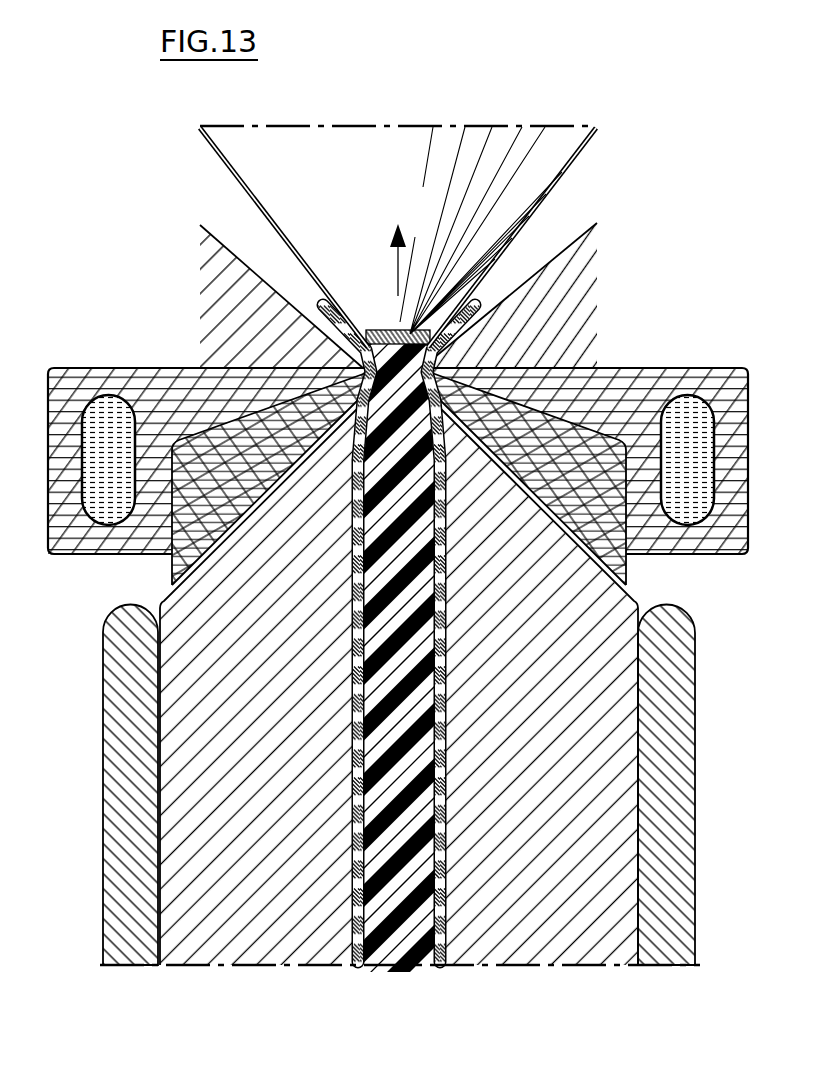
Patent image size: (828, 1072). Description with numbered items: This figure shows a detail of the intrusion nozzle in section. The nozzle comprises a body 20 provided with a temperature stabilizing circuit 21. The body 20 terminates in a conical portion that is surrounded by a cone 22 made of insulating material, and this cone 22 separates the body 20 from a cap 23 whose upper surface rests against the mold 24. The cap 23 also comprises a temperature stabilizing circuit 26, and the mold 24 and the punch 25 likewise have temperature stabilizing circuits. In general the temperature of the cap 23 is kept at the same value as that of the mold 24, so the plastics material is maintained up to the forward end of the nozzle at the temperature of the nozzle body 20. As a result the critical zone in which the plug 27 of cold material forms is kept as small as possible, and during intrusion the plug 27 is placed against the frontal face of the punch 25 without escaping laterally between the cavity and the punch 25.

The body 20 is at (578, 638).
The temperature stabilizing circuit 21 is at (678, 704).
The cone 22 is at (628, 572).
The cap 23 is at (624, 365).
The mold 24 is at (578, 310).
The punch 25 is at (537, 167).
The temperature stabilizing circuit 26 is at (692, 412).
The plug 27 is at (382, 328).